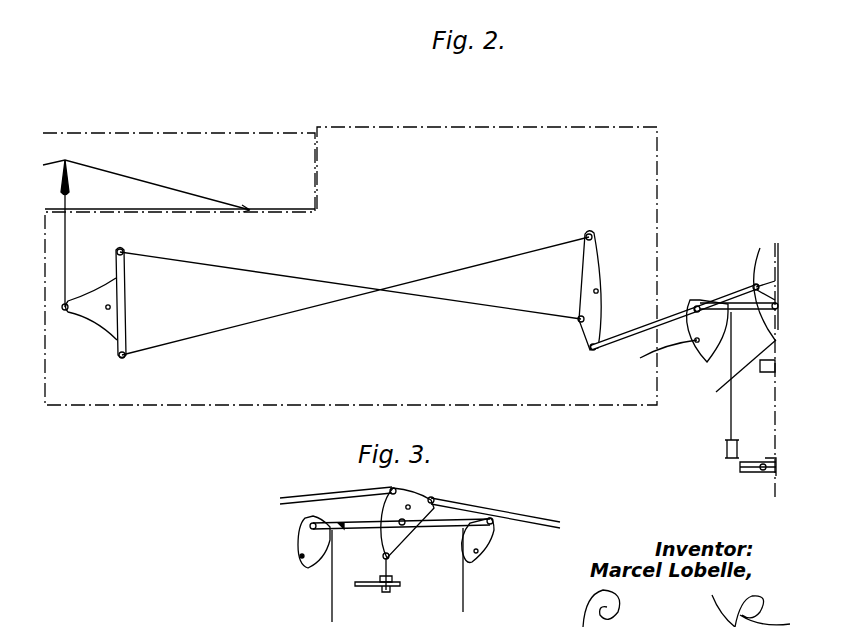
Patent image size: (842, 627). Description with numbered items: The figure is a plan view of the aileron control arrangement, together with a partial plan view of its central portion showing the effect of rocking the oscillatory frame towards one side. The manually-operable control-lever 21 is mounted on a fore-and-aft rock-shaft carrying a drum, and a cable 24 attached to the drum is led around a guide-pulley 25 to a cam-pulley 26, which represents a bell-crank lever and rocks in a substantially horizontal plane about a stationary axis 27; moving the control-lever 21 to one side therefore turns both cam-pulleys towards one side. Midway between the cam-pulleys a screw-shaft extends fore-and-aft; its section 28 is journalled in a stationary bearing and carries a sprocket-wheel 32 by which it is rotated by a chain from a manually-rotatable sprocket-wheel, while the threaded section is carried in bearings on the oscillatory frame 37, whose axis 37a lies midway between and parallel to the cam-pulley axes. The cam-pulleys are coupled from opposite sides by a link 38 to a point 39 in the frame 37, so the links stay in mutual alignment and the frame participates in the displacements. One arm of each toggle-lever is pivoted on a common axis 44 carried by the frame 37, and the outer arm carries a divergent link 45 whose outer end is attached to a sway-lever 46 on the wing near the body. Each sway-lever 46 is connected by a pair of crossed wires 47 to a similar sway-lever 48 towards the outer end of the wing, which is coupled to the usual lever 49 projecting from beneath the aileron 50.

In FIG. 2, the control-lever 21 is at (758, 477).
In FIG. 2, the cable 24 is at (733, 421).
In FIG. 3, the cable 24 is at (332, 586).
In FIG. 2, the guide-pulley 25 is at (727, 446).
In FIG. 2, the cam-pulley 26 is at (702, 345).
In FIG. 3, the cam-pulley 26 is at (306, 540).
In FIG. 2, the stationary axis 27 is at (662, 361).
In FIG. 3, the stationary axis 27 is at (302, 556).
In FIG. 3, the screw-shaft section 28 is at (383, 567).
In FIG. 3, the sprocket-wheel 32 is at (380, 585).
In FIG. 3, the oscillatory frame 37 is at (398, 546).
In FIG. 2, the axis of oscillation 37a is at (734, 375).
In FIG. 3, the axis of oscillation 37a is at (385, 554).
In FIG. 2, the link 38 is at (731, 303).
In FIG. 3, the link 38 is at (340, 527).
In FIG. 2, the point in the frame 39 is at (770, 314).
In FIG. 3, the point in the frame 39 is at (412, 526).
In FIG. 3, the common axis 44 is at (410, 508).
In FIG. 2, the divergent link 45 is at (618, 338).
In FIG. 3, the divergent link 45 is at (296, 500).
In FIG. 2, the sway-lever 46 is at (592, 267).
In FIG. 2, the crossed wires 47 is at (487, 305).
In FIG. 2, the sway-lever 48 is at (108, 295).
In FIG. 2, the lever 49 is at (146, 233).
In FIG. 2, the aileron 50 is at (155, 150).